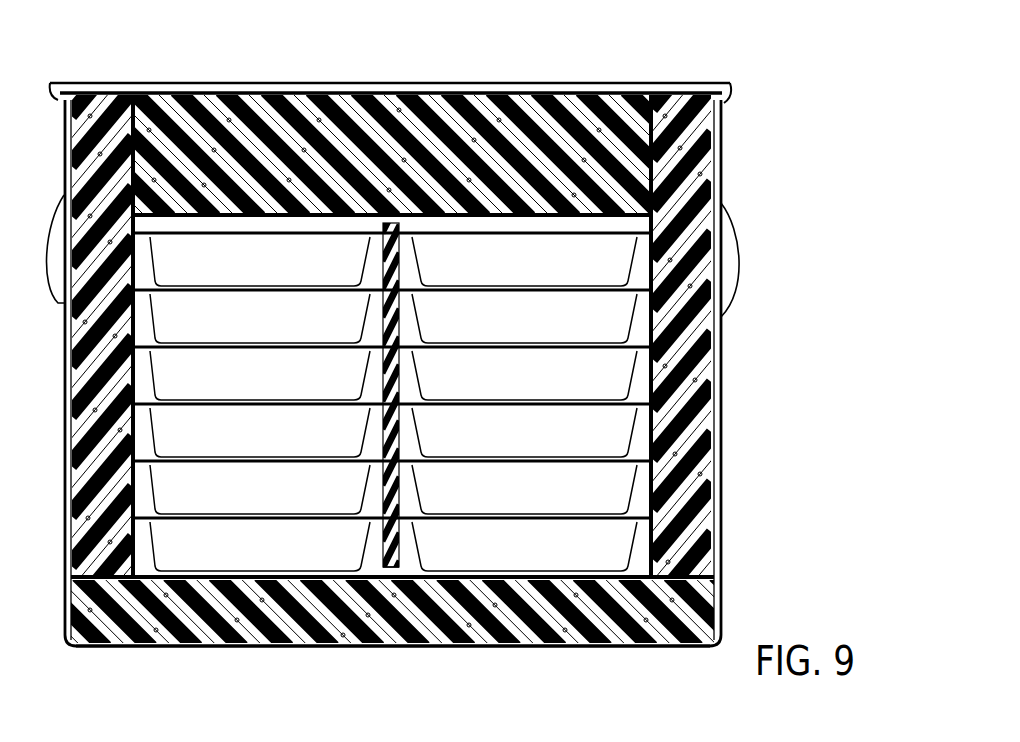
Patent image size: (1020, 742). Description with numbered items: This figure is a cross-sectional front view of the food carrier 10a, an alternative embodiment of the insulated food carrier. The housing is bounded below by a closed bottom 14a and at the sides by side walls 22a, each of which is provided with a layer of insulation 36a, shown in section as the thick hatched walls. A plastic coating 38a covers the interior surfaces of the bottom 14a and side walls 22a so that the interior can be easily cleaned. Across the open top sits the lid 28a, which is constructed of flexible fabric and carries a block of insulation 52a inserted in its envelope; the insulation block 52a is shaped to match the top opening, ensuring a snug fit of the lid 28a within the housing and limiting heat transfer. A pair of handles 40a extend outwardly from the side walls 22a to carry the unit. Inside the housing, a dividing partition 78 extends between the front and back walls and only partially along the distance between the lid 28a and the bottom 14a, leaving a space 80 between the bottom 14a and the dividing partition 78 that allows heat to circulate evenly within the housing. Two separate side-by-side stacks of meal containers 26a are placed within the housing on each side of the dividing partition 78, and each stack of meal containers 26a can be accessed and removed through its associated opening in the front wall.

The food carrier 10a is at (812, 76).
The bottom 14a is at (410, 647).
The side walls 22a is at (722, 473).
The meal containers 26a is at (634, 256).
The lid 28a is at (663, 76).
The insulation 36a is at (690, 405).
The plastic coating 38a is at (680, 355).
The handles 40a is at (737, 277).
The insulation block 52a is at (550, 122).
The dividing partition 78 is at (386, 224).
The space 80 is at (390, 567).